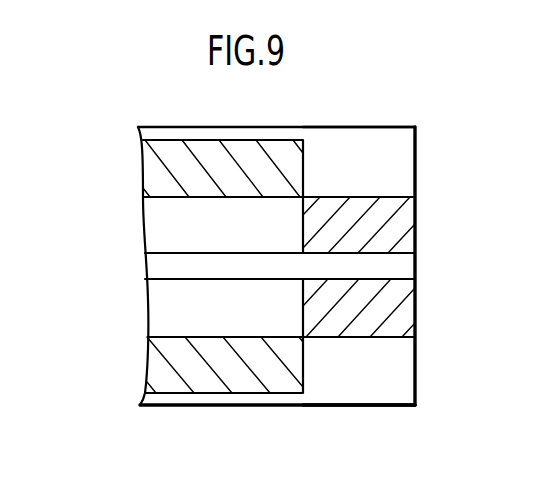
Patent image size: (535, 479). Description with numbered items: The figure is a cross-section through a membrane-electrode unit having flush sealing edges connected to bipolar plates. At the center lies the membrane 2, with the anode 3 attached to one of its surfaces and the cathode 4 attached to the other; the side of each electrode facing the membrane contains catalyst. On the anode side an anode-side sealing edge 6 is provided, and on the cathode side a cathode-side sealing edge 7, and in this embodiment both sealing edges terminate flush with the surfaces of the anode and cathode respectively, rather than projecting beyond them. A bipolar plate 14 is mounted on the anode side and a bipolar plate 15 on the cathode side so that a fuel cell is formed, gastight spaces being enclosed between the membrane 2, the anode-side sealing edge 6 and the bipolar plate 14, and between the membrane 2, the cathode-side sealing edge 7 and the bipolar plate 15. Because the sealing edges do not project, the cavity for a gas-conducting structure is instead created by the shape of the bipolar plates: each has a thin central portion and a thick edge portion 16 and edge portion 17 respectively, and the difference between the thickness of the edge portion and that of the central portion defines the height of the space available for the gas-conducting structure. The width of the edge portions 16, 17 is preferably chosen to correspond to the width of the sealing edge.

The membrane 2 is at (165, 266).
The anode 3 is at (188, 315).
The cathode 4 is at (188, 230).
The anode-side sealing edge 6 is at (377, 307).
The cathode-side sealing edge 7 is at (376, 232).
The bipolar plate 14 is at (320, 393).
The bipolar plate 15 is at (323, 142).
The edge portion 16 is at (370, 367).
The edge portion 17 is at (365, 168).